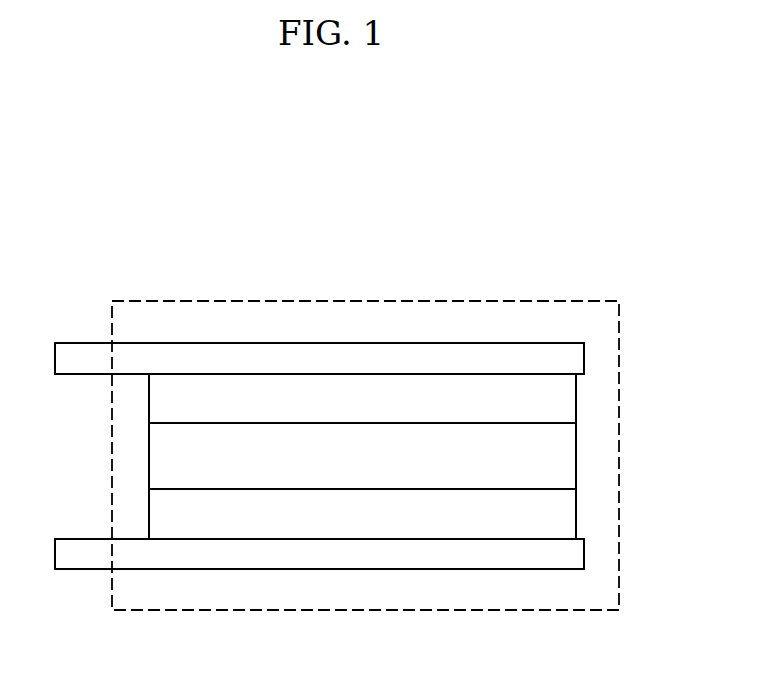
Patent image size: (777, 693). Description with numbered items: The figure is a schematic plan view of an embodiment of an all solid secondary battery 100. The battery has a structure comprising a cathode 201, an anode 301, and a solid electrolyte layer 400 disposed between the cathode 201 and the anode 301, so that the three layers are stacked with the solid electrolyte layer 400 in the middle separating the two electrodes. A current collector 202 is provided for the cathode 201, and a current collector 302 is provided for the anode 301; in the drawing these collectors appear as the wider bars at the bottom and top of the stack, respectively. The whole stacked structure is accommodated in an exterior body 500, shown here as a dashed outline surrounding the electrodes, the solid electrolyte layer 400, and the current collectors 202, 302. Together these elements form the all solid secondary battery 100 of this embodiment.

The all solid secondary battery 100 is at (118, 237).
The exterior body 500 is at (362, 300).
The current collector 302 is at (577, 360).
The anode 301 is at (562, 404).
The solid electrolyte layer 400 is at (562, 460).
The cathode 201 is at (562, 513).
The current collector 202 is at (577, 554).